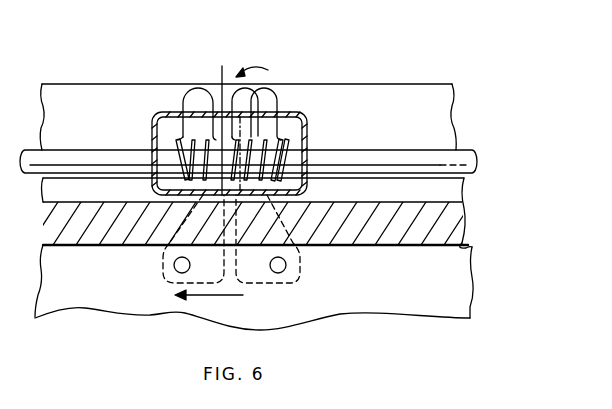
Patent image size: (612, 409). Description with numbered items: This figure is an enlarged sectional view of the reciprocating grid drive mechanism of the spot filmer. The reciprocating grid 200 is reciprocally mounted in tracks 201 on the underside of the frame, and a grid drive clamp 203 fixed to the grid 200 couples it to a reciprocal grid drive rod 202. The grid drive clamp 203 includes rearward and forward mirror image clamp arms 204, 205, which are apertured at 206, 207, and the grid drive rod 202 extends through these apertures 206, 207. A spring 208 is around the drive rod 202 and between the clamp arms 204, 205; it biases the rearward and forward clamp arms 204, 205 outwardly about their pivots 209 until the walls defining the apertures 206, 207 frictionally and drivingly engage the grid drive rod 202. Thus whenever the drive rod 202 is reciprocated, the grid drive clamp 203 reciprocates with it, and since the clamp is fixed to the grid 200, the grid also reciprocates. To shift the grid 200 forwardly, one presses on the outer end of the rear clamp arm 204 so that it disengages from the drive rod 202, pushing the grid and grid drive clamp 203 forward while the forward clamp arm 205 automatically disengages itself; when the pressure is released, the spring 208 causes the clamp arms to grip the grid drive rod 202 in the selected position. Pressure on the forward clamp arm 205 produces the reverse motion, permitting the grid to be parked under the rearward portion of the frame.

The reciprocating grid 200 is at (478, 264).
The tracks 201 is at (470, 245).
The grid drive rod 202 is at (273, 153).
The grid drive clamp 203 is at (308, 127).
The rearward clamp arm 204 is at (277, 88).
The forward clamp arm 205 is at (199, 98).
The aperture 206 is at (323, 149).
The aperture 207 is at (176, 160).
The spring 208 is at (241, 122).
The pivots 209 is at (190, 267).